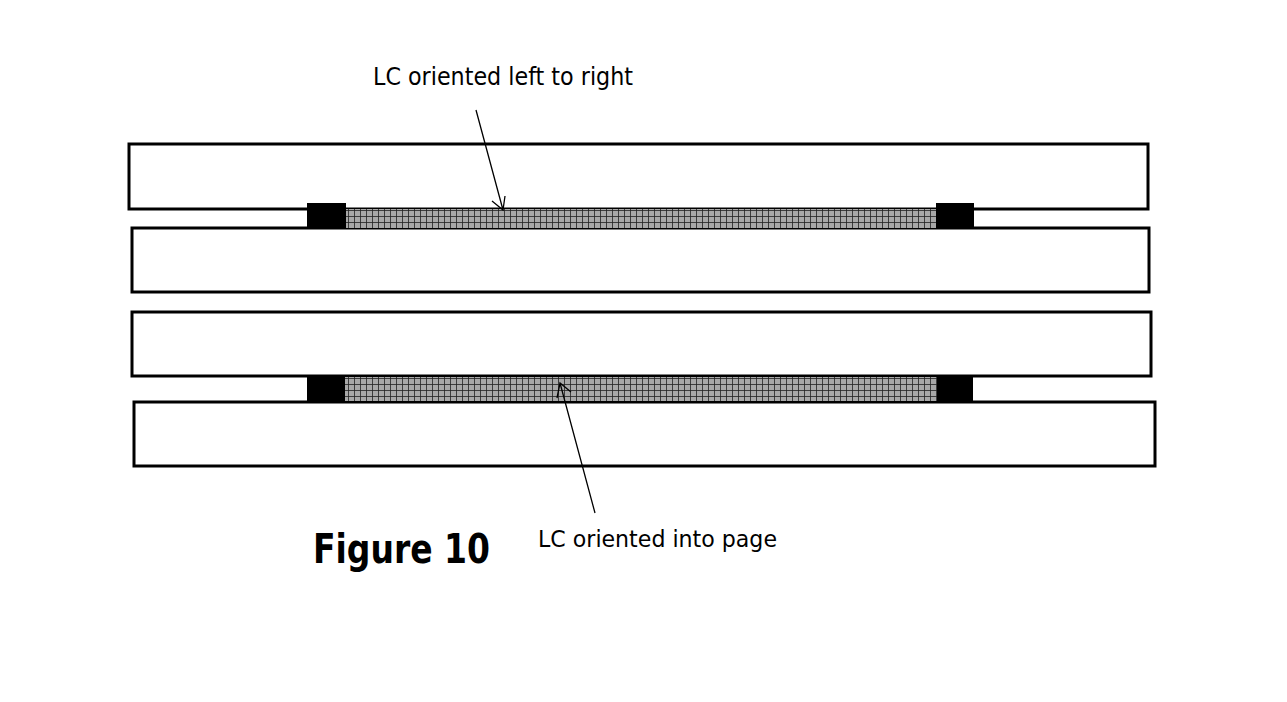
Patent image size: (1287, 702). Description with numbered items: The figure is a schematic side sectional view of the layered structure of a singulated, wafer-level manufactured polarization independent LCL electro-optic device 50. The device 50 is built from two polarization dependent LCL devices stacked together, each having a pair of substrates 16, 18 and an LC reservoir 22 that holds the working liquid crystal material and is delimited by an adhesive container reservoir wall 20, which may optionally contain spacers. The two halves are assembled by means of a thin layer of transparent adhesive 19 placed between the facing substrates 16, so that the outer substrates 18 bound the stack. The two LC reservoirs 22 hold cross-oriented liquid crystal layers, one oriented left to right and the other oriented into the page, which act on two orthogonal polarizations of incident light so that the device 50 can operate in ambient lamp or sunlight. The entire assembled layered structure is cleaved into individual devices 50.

The polarization independent LCL electro-optic device 50 is at (758, 107).
The substrate 18 is at (642, 305).
The substrate 16 is at (641, 302).
The container reservoir wall 20 is at (326, 357).
The LC reservoir 22 is at (889, 223).
The adhesive 19 is at (1162, 313).